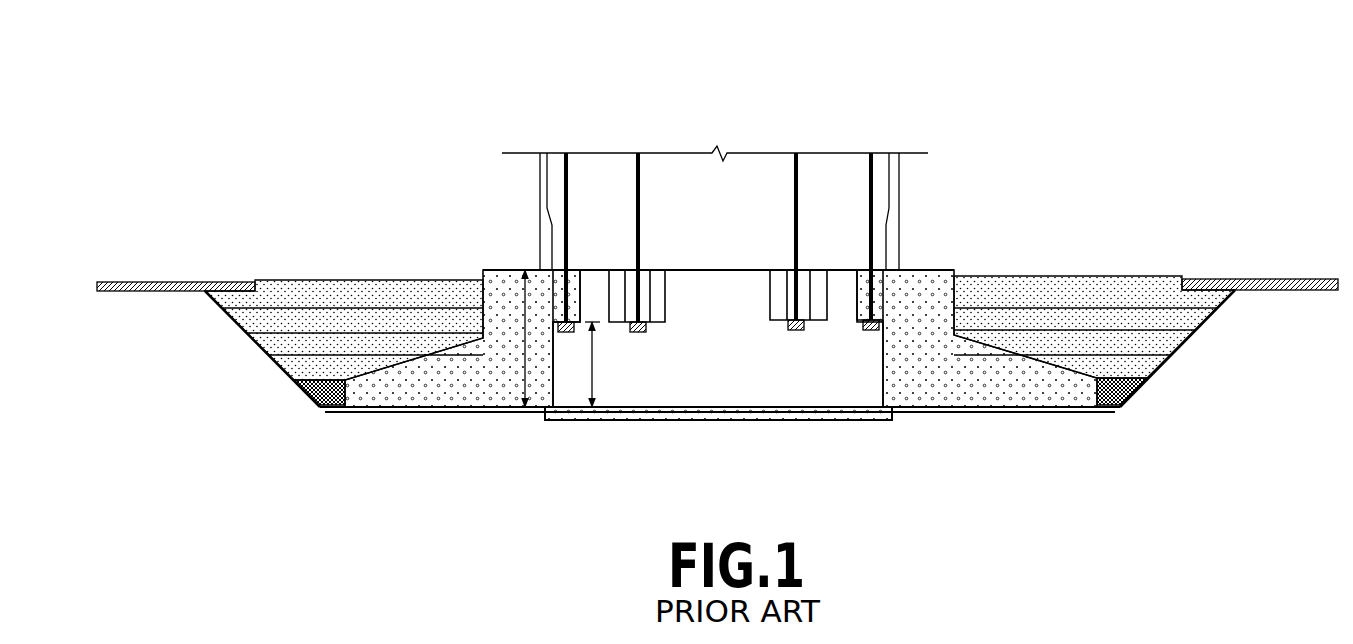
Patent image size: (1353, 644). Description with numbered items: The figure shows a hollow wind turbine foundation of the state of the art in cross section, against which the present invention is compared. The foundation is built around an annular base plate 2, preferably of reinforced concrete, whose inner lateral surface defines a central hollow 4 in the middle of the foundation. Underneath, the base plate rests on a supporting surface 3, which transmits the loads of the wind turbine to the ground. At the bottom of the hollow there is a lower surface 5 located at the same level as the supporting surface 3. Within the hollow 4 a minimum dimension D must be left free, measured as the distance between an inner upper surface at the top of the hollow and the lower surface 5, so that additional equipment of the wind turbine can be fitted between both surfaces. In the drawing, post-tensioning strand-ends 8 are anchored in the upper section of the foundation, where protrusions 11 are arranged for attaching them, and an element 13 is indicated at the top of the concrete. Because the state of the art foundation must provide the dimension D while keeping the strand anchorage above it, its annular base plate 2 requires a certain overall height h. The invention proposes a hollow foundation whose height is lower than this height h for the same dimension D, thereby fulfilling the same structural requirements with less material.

The annular base plate 2 is at (938, 374).
The supporting surface 3 is at (990, 413).
The central hollow 4 is at (711, 376).
The lower surface 5 is at (825, 420).
The post-tensioning strand-end 8 is at (805, 175).
The protrusion 11 is at (770, 290).
The top plate 13 is at (918, 268).
The height of the state of the art foundation h is at (514, 338).
The minimum dimension D is at (601, 362).